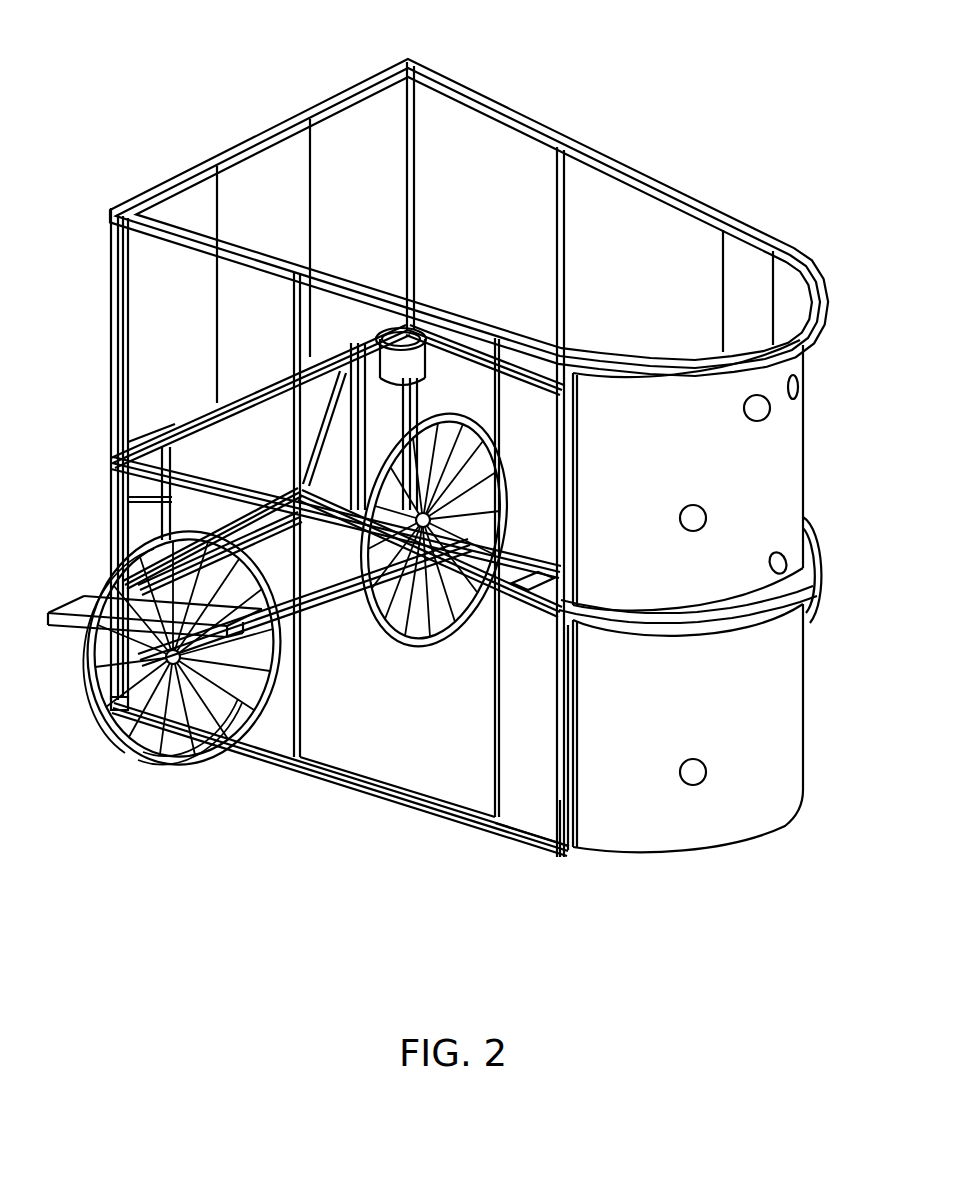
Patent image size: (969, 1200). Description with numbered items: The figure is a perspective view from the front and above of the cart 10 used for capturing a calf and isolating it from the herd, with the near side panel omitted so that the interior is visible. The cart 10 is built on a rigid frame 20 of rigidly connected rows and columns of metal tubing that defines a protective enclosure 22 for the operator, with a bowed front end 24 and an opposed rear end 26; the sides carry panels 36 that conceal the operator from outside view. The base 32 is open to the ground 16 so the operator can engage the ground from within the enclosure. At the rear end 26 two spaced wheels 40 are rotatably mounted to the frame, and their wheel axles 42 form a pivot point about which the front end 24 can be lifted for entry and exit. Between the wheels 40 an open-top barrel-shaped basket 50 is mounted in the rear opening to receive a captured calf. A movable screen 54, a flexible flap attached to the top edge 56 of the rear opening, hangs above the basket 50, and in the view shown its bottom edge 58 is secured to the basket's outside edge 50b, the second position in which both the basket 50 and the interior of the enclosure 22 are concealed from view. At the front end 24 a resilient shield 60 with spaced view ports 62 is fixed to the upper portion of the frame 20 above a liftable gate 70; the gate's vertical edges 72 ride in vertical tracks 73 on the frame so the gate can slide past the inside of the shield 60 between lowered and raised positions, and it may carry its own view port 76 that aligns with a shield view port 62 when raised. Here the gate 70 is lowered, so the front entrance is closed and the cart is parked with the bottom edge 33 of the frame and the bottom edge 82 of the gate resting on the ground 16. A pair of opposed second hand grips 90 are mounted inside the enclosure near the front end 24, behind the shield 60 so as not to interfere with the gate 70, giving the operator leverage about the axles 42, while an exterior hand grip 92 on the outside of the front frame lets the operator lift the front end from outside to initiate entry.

The cart 10 is at (140, 783).
The ground 16 is at (653, 1007).
The rigid frame 20 is at (470, 80).
The protective enclosure 22 is at (500, 186).
The front end 24 is at (817, 266).
The rear end 26 is at (208, 137).
The base 32 is at (353, 743).
The bottom edge of the frame 33 is at (527, 847).
The side panels 36 is at (572, 542).
The wheels 40 is at (98, 665).
The wheel axles 42 is at (122, 712).
The basket 50 is at (344, 594).
The outside edge of the basket 50b is at (243, 518).
The movable screen 54 is at (337, 451).
The top edge of the opening 56 is at (197, 421).
The bottom edge of the flap 58 is at (221, 533).
The shield 60 is at (688, 475).
The view ports 62 is at (793, 400).
The liftable gate 70 is at (688, 725).
The vertical edges of the gate 72 is at (578, 782).
The vertical tracks 73 is at (547, 777).
The gate view ports 76 is at (707, 778).
The bottom edge of the gate 82 is at (737, 853).
The second hand grips 90 is at (538, 576).
The exterior hand grip 92 is at (773, 622).